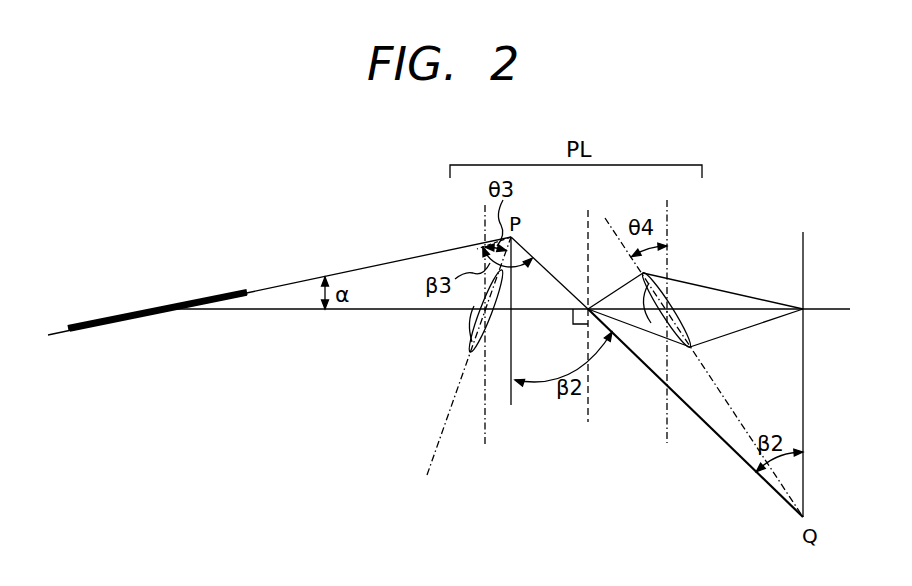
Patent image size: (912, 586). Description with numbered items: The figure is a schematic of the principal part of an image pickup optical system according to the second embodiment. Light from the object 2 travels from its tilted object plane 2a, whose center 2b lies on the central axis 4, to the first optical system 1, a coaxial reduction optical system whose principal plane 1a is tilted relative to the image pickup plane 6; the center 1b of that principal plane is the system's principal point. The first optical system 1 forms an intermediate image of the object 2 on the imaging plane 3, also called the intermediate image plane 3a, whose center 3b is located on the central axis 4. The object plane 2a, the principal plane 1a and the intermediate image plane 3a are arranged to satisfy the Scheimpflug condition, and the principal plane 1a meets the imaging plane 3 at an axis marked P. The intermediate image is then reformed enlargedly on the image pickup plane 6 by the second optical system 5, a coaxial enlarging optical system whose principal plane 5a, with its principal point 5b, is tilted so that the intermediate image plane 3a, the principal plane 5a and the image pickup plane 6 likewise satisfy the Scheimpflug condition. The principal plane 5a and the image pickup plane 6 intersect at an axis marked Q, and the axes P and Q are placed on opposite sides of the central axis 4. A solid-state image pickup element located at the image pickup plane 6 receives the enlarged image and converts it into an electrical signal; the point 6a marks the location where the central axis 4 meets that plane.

The first optical system 1 is at (490, 338).
The principal plane of the first optical system 1a is at (428, 458).
The center (principal point) of the principal plane of the first optical system 1b is at (477, 322).
The object 2 is at (143, 316).
The object plane 2a is at (390, 262).
The center of the object plane 2b is at (170, 314).
The imaging plane (intermediate image plane) 3 is at (537, 262).
The intermediate image plane 3a is at (752, 468).
The center of the intermediate image plane 3b is at (590, 305).
The central axis 4 is at (372, 312).
The second optical system 5 is at (693, 347).
The principal plane of the second optical system 5a is at (728, 402).
The center (principal point) of the principal plane of the second optical system 5b is at (669, 302).
The image pickup plane (final image plane) 6 is at (805, 360).
The focal point on image plane 6a is at (805, 306).